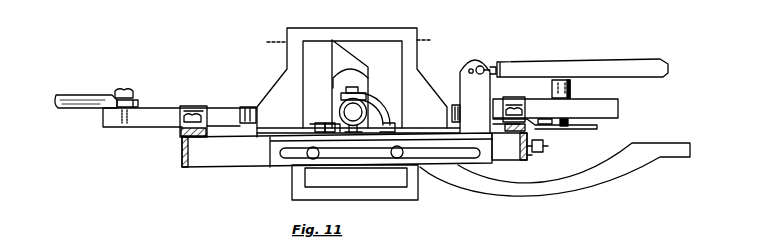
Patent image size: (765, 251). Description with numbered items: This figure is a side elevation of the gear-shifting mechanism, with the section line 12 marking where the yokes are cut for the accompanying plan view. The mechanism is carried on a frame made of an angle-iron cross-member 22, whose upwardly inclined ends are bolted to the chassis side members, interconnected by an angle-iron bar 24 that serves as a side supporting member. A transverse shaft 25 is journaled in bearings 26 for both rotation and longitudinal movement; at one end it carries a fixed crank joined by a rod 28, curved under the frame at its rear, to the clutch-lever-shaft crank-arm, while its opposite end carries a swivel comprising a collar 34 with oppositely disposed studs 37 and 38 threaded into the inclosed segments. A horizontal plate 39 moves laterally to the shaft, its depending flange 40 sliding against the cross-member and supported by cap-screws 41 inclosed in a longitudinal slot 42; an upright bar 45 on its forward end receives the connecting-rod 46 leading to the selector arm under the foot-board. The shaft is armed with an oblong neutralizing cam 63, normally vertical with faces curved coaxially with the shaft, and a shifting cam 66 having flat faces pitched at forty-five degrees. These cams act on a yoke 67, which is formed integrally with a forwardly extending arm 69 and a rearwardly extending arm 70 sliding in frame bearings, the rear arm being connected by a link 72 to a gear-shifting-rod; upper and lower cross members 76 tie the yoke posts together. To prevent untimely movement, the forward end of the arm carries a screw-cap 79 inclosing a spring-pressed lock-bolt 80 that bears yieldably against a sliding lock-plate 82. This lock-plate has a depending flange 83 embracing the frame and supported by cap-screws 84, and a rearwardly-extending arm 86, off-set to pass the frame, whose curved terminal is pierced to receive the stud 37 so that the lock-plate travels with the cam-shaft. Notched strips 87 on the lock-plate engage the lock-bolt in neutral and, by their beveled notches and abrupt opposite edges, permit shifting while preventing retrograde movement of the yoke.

The section line 12 is at (349, 42).
The angle-iron cross-member 22 is at (509, 146).
The angle-iron bar 24 is at (337, 150).
The transverse shaft 25 is at (357, 108).
The bearing 26 is at (347, 27).
The rod 28 is at (657, 158).
The collar 34 is at (340, 100).
The stud 37 is at (346, 90).
The stud 38 is at (310, 127).
The horizontal plate 39 is at (428, 139).
The depending flange 40 is at (277, 158).
The cap-screw 41 is at (307, 160).
The longitudinal slot 42 is at (310, 158).
The upright bar 45 is at (475, 60).
The connecting-rod 46 is at (577, 57).
The oblong cam 63 is at (350, 78).
The shifting cam 66 is at (352, 59).
The yoke 67 is at (350, 82).
The arm 69 is at (610, 107).
The arm 70 is at (162, 115).
The link 72 is at (92, 85).
The cross member 76 is at (315, 192).
The screw-cap 79 is at (570, 90).
The lock-bolt 80 is at (567, 125).
The sliding lock-plate 82 is at (597, 128).
The depending flange 83 is at (528, 158).
The cap-screw 84 is at (548, 146).
The rearwardly-extending arm 86 is at (420, 124).
The strip 87 is at (545, 122).